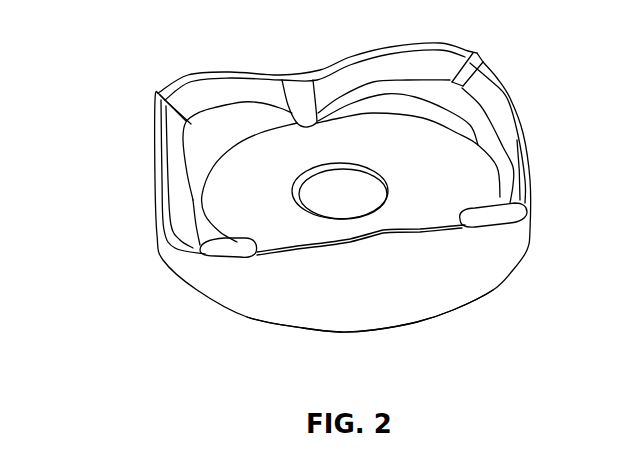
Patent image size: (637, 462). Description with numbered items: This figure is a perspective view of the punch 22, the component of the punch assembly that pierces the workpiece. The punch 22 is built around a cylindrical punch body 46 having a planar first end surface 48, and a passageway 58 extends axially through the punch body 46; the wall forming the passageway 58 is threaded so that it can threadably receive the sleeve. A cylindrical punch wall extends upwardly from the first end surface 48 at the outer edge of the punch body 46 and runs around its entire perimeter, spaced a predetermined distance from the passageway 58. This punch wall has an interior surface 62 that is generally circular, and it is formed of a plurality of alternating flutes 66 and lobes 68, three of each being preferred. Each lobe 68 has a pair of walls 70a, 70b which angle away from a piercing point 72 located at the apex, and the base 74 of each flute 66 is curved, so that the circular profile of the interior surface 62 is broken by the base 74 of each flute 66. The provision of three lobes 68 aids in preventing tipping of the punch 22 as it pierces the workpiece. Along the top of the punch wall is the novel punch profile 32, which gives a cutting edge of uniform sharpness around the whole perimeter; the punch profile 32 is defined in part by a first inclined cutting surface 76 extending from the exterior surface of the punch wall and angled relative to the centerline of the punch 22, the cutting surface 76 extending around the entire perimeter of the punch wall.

The punch 22 is at (110, 156).
The punch profile 32 is at (190, 75).
The cylindrical punch body 46 is at (447, 287).
The first end surface 48 is at (262, 194).
The passageway 58 is at (342, 190).
The interior surface 62 is at (528, 187).
The flutes 66 is at (232, 260).
The lobes 68 is at (382, 255).
The wall 70a is at (303, 260).
The wall 70b is at (473, 250).
The piercing point 72 is at (383, 230).
The base 74 is at (487, 92).
The cutting surface 76 is at (518, 105).